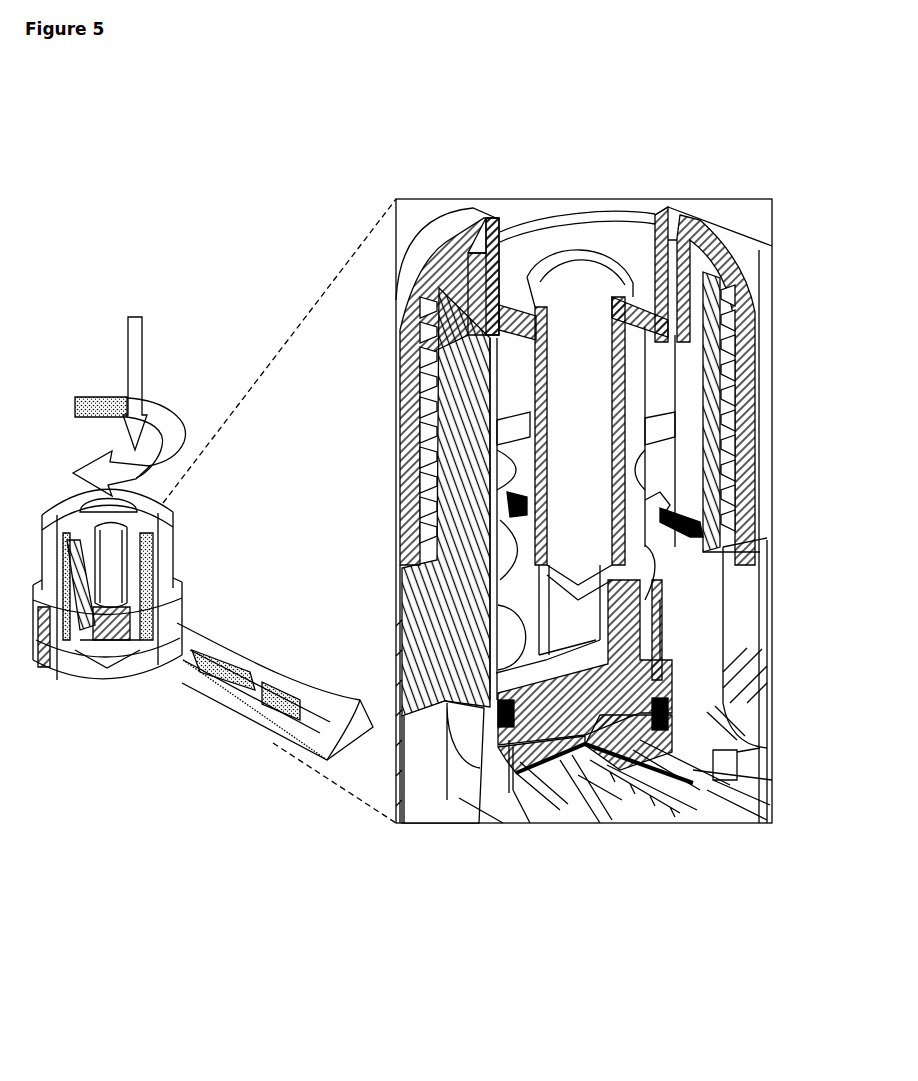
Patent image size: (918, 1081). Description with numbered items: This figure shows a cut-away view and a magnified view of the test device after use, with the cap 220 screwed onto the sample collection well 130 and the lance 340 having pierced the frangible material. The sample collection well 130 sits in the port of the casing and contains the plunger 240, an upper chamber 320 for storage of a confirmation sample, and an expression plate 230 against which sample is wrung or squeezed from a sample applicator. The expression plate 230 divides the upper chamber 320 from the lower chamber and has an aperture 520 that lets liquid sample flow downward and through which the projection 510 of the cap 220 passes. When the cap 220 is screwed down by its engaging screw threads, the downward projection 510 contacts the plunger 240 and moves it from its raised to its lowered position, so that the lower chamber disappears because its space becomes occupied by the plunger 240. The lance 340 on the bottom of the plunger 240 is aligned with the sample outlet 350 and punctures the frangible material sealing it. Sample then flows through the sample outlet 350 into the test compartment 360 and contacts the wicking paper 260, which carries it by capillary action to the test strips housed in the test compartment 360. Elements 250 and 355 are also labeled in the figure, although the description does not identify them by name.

The sample collection well 130 is at (441, 288).
The cap 220 is at (465, 232).
The expression plate 230 is at (688, 505).
The plunger 240 is at (677, 662).
The lower seal 250 is at (662, 728).
The wicking paper 260 is at (703, 790).
The upper chamber 320 is at (485, 767).
The lance 340 is at (572, 760).
The sample outlet 350 is at (542, 770).
The seat plate 355 is at (672, 780).
The test compartment 360 is at (747, 652).
The projection 510 is at (659, 475).
The aperture 520 is at (702, 452).